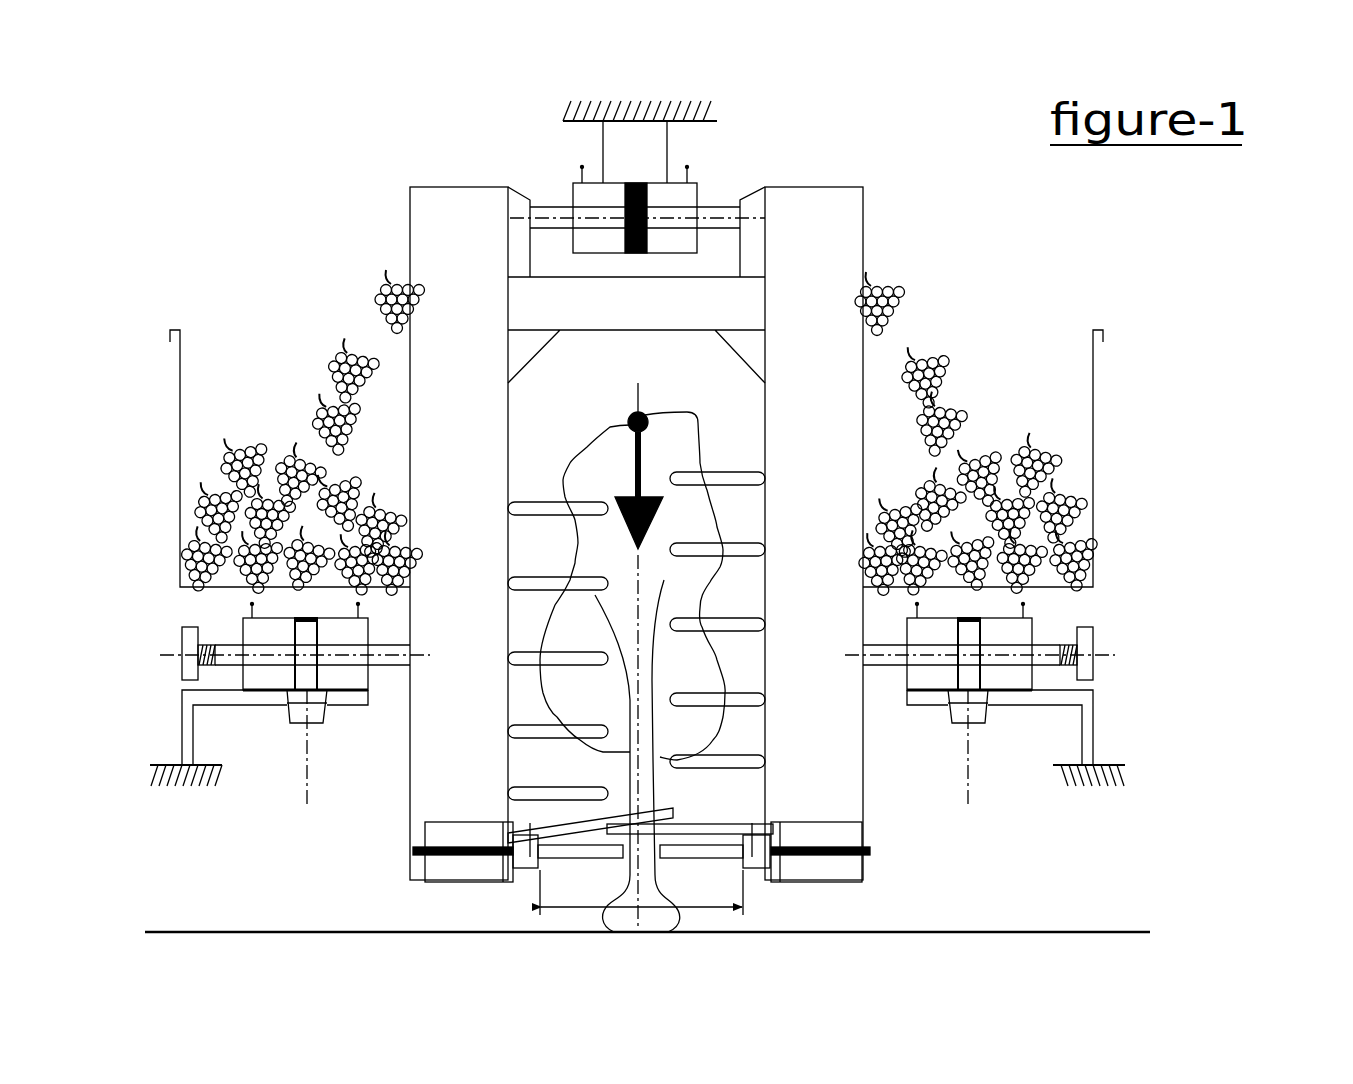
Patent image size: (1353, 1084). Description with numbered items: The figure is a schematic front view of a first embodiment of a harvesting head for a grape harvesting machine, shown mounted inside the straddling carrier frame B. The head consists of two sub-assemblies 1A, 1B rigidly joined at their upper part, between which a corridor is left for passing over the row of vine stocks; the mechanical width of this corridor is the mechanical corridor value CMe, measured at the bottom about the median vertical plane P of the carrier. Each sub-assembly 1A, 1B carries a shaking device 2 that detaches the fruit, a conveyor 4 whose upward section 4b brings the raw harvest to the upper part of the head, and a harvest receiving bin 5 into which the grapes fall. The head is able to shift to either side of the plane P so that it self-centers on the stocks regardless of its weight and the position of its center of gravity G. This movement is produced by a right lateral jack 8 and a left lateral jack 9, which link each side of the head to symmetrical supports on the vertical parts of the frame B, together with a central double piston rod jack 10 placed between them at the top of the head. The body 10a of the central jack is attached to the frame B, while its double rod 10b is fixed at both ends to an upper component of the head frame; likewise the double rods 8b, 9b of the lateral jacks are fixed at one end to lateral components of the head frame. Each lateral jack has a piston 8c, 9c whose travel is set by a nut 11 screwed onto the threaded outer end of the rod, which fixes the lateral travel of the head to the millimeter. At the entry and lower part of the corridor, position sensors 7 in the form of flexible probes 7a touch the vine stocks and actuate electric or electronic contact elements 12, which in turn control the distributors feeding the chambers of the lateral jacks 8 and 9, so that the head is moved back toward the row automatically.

The straddling carrier frame B is at (618, 148).
The double piston rod jack 10 is at (697, 183).
The body of central jack 10a is at (677, 241).
The double rod of central jack 10b is at (590, 241).
The upward section of conveyor 4b is at (453, 238).
The sub-assembly 1B is at (393, 260).
The sub-assembly 1A is at (887, 267).
The conveyor 4 is at (865, 373).
The shaking device 2 is at (540, 505).
The harvest receiving bin 5 is at (1093, 383).
The center of gravity G is at (632, 654).
The median vertical plane P is at (637, 587).
The nut 11 is at (188, 635).
The left lateral jack 9 is at (267, 677).
The double rod of left jack 9b is at (363, 657).
The piston of left jack 9c is at (305, 677).
The position sensors 7 is at (595, 815).
The contact elements 12 is at (500, 845).
The flexible probes 7a is at (587, 850).
The right lateral jack 8 is at (1007, 677).
The double rod of right jack 8b is at (877, 657).
The piston of right jack 8c is at (973, 665).
The mechanical corridor value CMe is at (641, 892).